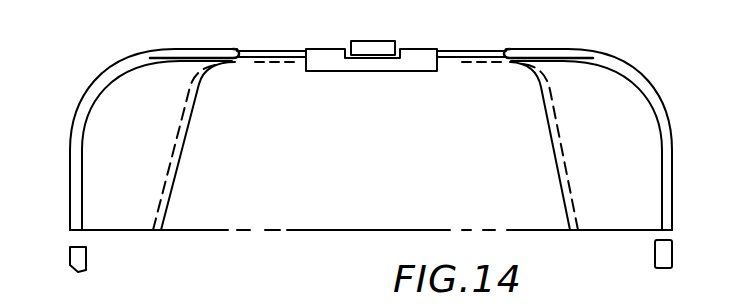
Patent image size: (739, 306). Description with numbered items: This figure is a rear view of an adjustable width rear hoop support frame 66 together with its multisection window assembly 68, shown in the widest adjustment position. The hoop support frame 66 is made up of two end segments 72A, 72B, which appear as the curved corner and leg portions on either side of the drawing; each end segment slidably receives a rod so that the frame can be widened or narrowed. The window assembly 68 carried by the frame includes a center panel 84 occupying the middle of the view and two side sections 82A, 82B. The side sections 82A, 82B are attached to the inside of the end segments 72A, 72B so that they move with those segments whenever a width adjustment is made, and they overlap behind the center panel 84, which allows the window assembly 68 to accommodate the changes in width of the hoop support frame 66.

The adjustable width rear hoop support frame 66 is at (153, 50).
The multisection window assembly 68 is at (527, 230).
The end segment 72A is at (70, 132).
The end segment 72B is at (597, 50).
The side section 82A is at (112, 222).
The side section 82B is at (642, 146).
The center panel 84 is at (357, 152).